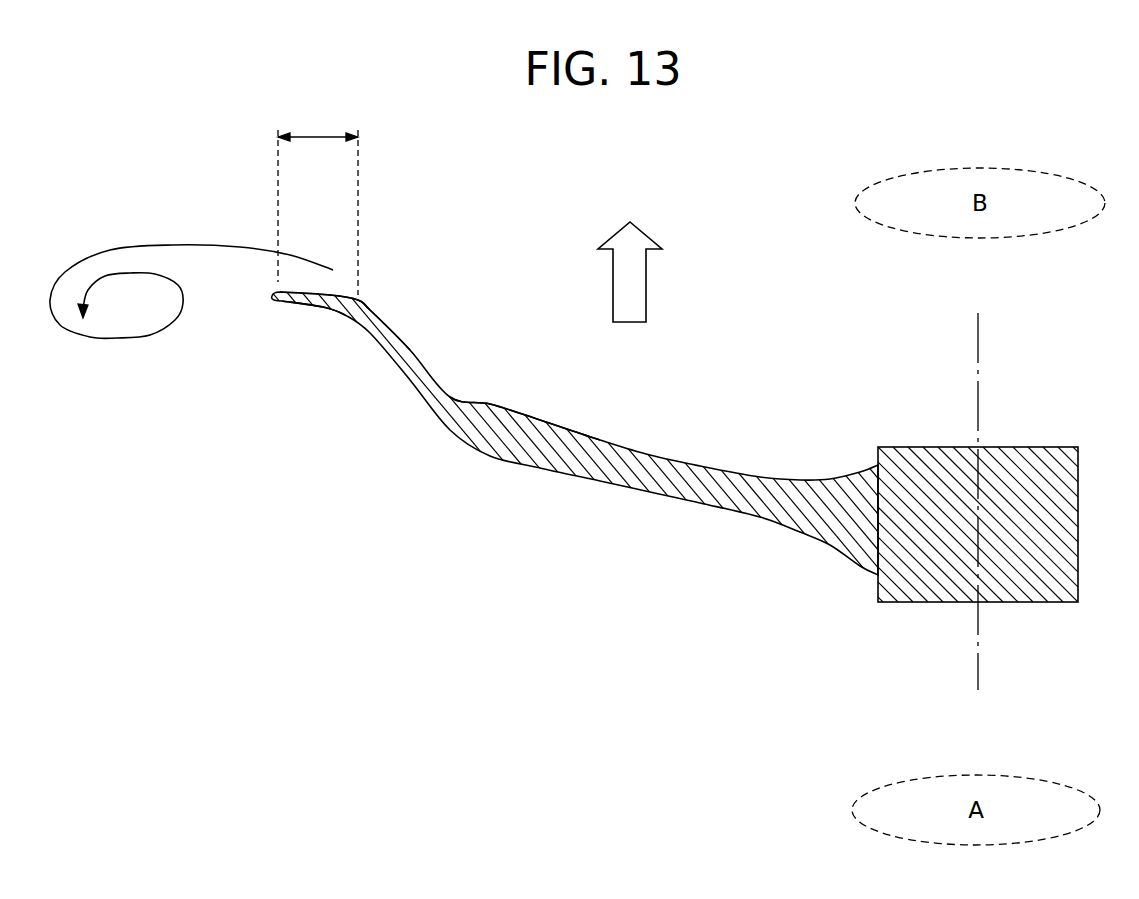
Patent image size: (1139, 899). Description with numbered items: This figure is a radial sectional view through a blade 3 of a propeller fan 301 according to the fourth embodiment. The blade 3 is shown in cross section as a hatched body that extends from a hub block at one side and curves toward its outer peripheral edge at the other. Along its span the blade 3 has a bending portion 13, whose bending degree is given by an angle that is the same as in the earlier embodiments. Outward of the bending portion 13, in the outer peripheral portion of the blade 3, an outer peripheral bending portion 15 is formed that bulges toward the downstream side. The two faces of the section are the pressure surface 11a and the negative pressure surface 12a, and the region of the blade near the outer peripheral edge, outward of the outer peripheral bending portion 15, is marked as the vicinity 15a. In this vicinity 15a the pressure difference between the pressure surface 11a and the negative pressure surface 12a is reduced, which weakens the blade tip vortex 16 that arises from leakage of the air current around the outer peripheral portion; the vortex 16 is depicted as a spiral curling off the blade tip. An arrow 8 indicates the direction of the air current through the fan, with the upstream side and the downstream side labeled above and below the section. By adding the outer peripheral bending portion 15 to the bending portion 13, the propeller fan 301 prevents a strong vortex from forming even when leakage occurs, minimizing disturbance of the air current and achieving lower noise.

The blade 3 is at (678, 450).
The airflow direction 8 is at (646, 278).
The pressure surface 11a is at (328, 292).
The negative pressure surface 12a is at (310, 310).
The bending portion 13 is at (497, 422).
The outer peripheral bending portion 15 is at (368, 310).
The vicinity of outer peripheral edge 15a is at (318, 202).
The blade tip vortex 16 is at (117, 342).
The propeller fan 301 is at (1127, 317).